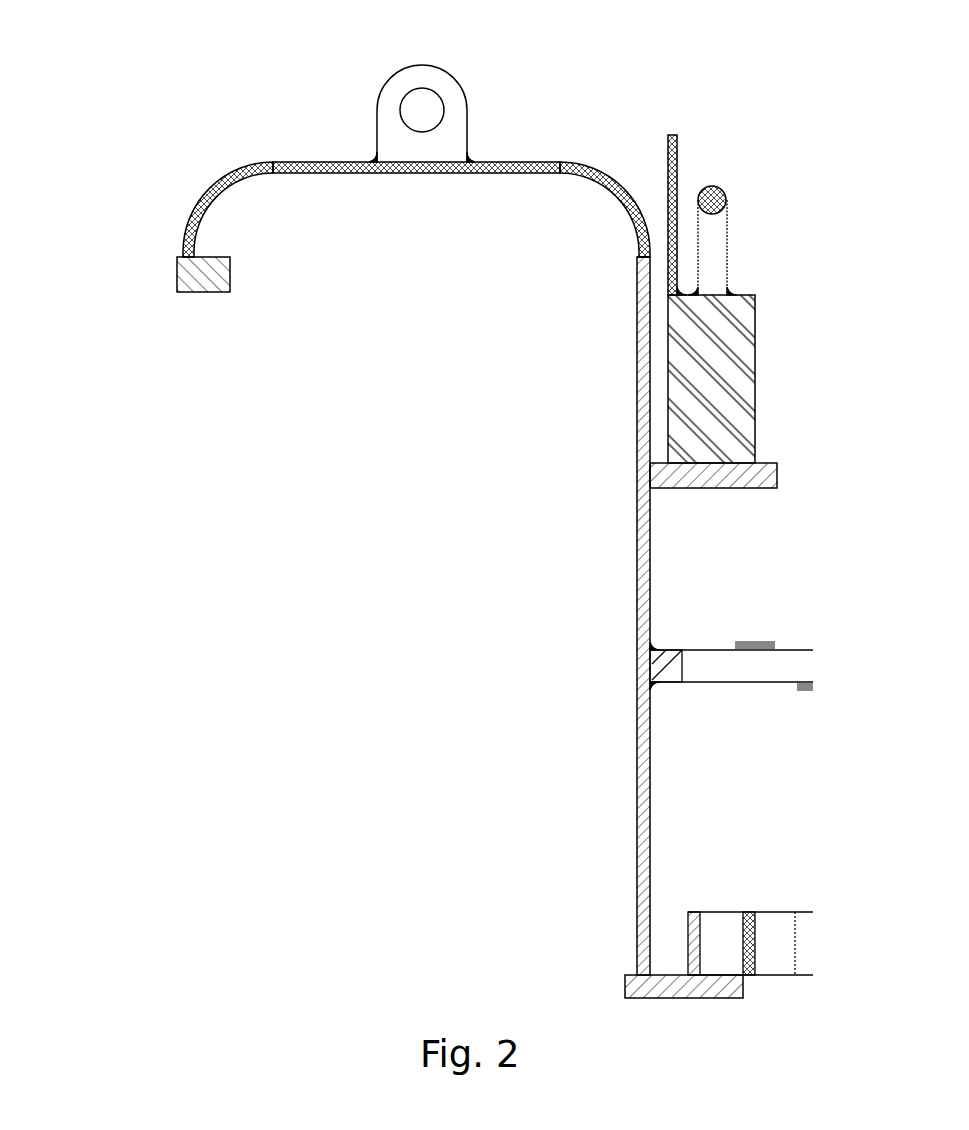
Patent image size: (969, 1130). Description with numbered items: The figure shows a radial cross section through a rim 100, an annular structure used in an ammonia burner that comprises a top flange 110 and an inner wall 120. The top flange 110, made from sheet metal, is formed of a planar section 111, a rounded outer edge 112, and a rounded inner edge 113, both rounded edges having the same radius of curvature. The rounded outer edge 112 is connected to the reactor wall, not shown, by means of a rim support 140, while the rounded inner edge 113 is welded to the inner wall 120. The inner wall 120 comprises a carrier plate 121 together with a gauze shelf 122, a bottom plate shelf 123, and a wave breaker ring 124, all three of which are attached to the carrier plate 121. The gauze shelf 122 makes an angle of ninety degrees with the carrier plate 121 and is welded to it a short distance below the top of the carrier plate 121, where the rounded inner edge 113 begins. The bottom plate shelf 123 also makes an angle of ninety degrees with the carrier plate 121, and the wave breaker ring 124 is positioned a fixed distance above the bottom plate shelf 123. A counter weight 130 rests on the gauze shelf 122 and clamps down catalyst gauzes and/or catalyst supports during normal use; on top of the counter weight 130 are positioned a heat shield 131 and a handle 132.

The rim 100 is at (123, 57).
The top flange 110 is at (540, 148).
The planar section 111 is at (347, 167).
The rounded outer edge 112 is at (222, 194).
The rounded inner edge 113 is at (613, 197).
The inner wall 120 is at (598, 592).
The carrier plate 121 is at (640, 763).
The gauze shelf 122 is at (690, 470).
The bottom plate shelf 123 is at (667, 980).
The wave breaker ring 124 is at (665, 658).
The counter weight 130 is at (720, 378).
The heat shield on counter weight 131 is at (670, 203).
The handle of counter weight 132 is at (713, 197).
The rim support 140 is at (190, 283).